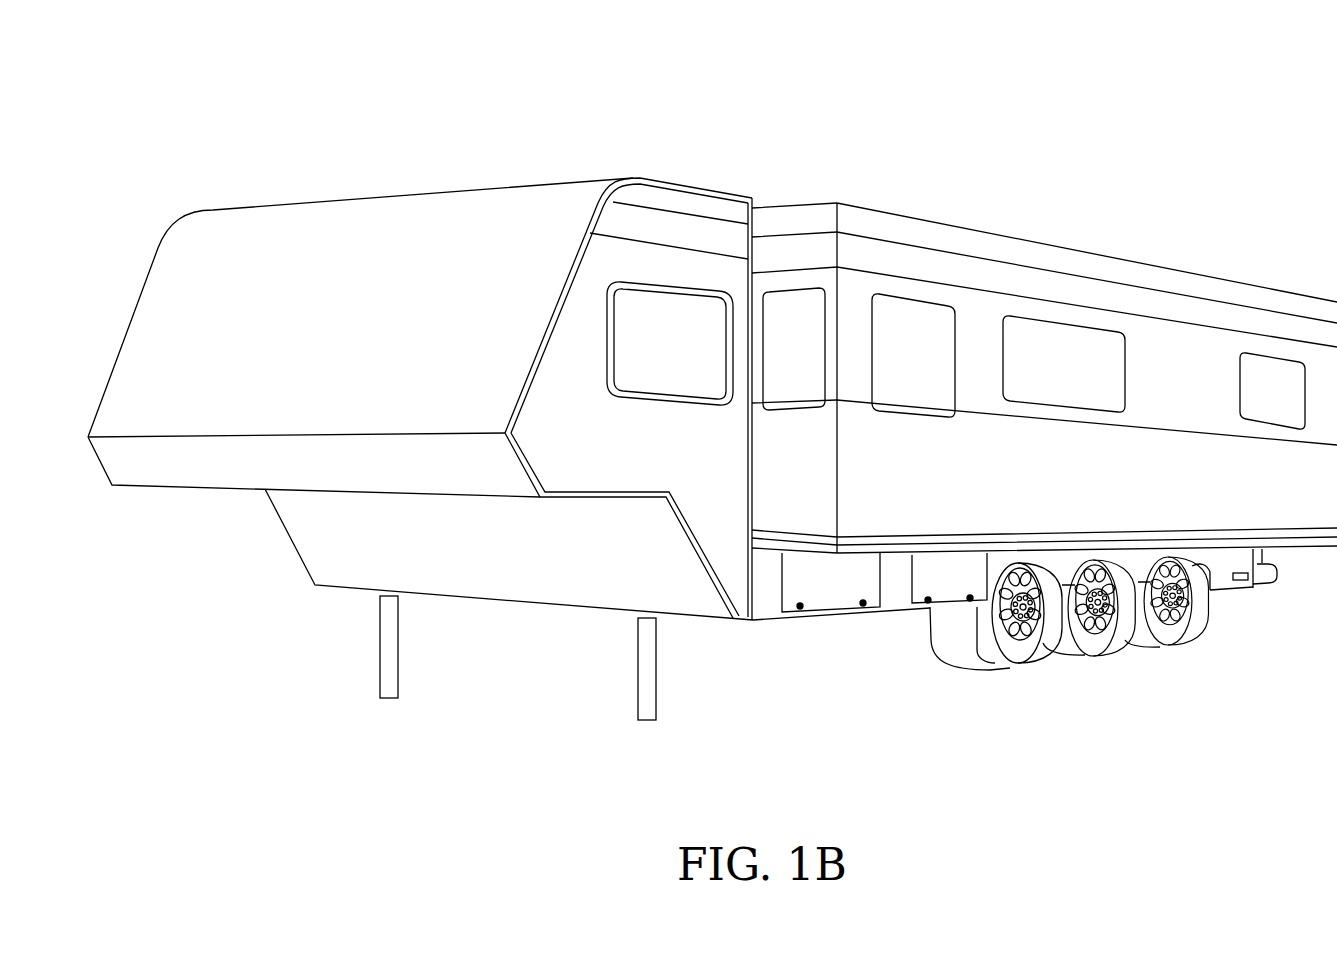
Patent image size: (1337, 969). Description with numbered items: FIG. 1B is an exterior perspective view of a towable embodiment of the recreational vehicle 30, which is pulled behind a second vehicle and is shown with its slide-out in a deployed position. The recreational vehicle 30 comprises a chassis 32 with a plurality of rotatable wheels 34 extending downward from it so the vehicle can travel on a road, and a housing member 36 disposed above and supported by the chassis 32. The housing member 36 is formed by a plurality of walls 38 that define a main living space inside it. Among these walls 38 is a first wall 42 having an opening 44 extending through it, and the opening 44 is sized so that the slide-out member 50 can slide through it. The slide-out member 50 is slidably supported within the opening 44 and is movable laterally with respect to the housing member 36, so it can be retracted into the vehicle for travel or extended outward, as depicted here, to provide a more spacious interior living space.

The recreational vehicle 30 is at (559, 90).
The chassis 32 is at (825, 600).
The rotatable wheels 34 is at (1187, 628).
The housing member 36 is at (683, 198).
The plurality of walls 38 is at (498, 160).
The first wall 42 is at (607, 467).
The opening 44 is at (1169, 192).
The slide-out member 50 is at (1227, 290).